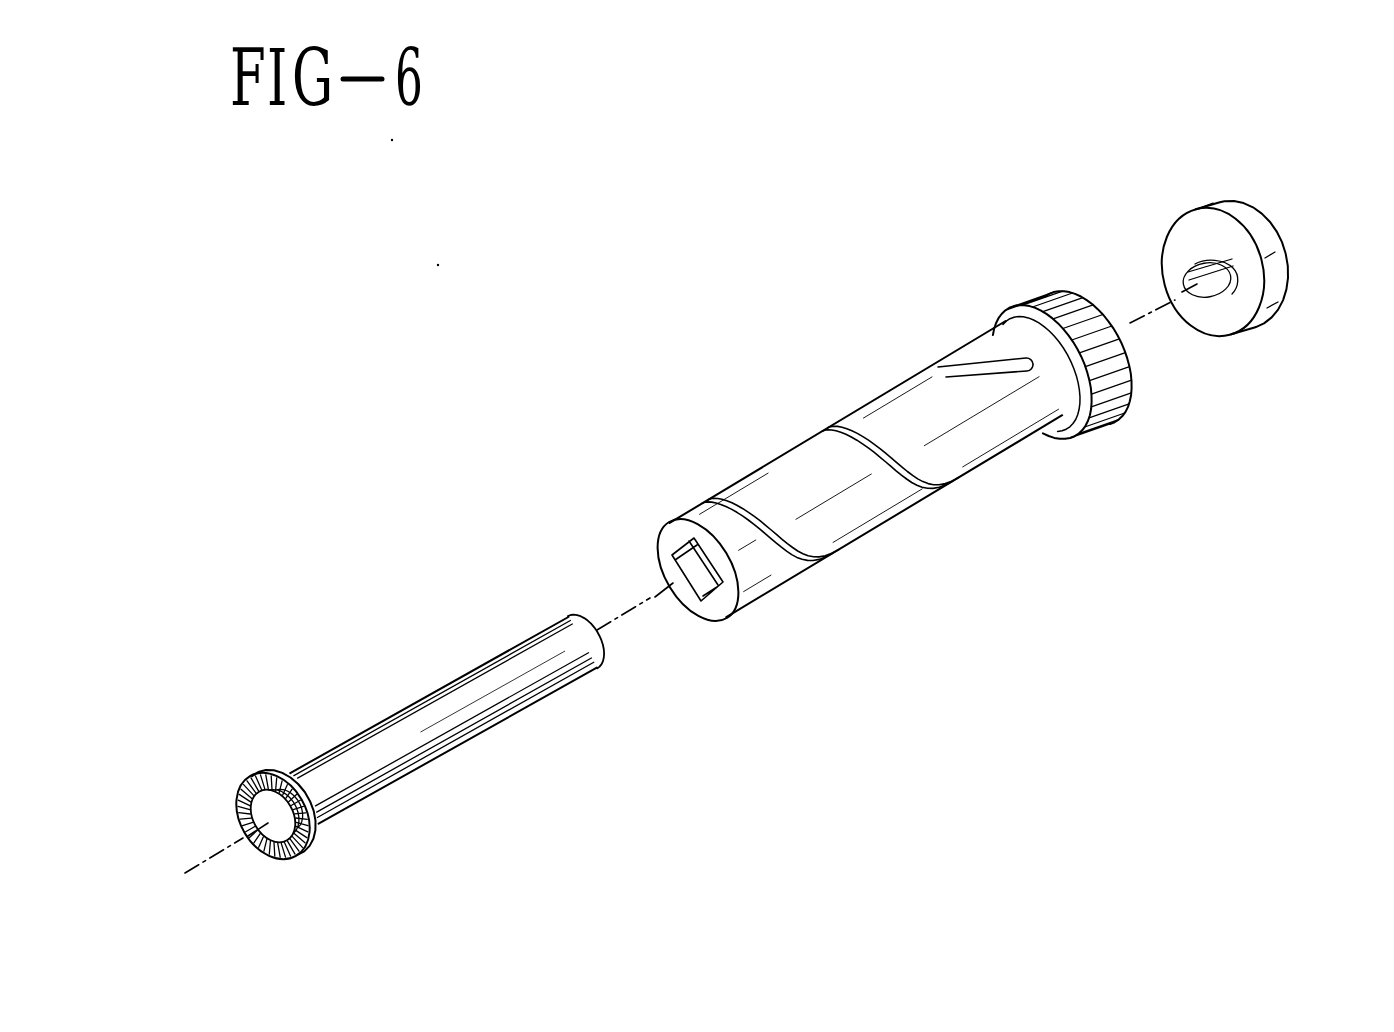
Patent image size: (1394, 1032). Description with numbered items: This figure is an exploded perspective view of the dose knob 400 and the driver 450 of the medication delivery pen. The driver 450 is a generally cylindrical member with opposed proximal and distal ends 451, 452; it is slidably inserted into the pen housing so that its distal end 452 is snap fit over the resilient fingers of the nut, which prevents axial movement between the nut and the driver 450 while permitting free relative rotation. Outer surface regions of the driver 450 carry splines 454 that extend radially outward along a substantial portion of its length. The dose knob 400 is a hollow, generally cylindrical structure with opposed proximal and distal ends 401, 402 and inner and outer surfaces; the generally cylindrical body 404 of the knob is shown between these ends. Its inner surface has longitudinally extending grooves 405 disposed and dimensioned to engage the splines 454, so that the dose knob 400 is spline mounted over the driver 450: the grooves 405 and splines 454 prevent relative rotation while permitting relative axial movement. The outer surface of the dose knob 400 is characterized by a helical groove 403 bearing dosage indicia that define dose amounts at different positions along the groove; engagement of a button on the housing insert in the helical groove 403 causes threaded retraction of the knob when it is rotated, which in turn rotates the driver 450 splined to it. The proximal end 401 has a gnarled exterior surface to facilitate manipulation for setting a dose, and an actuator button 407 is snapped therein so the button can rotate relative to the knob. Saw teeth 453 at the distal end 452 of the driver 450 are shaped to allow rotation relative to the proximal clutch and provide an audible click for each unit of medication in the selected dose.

The dose knob 400 is at (934, 495).
The proximal end of dose knob 401 is at (1117, 375).
The distal end of dose knob 402 is at (717, 610).
The helical groove 403 is at (868, 437).
The driver body 404 is at (880, 502).
The longitudinally extending grooves 405 is at (673, 553).
The actuator button 407 is at (1248, 226).
The driver 450 is at (420, 744).
The proximal end of driver 451 is at (588, 672).
The distal end of driver 452 is at (300, 802).
The saw teeth 453 is at (240, 803).
The splines 454 is at (503, 715).